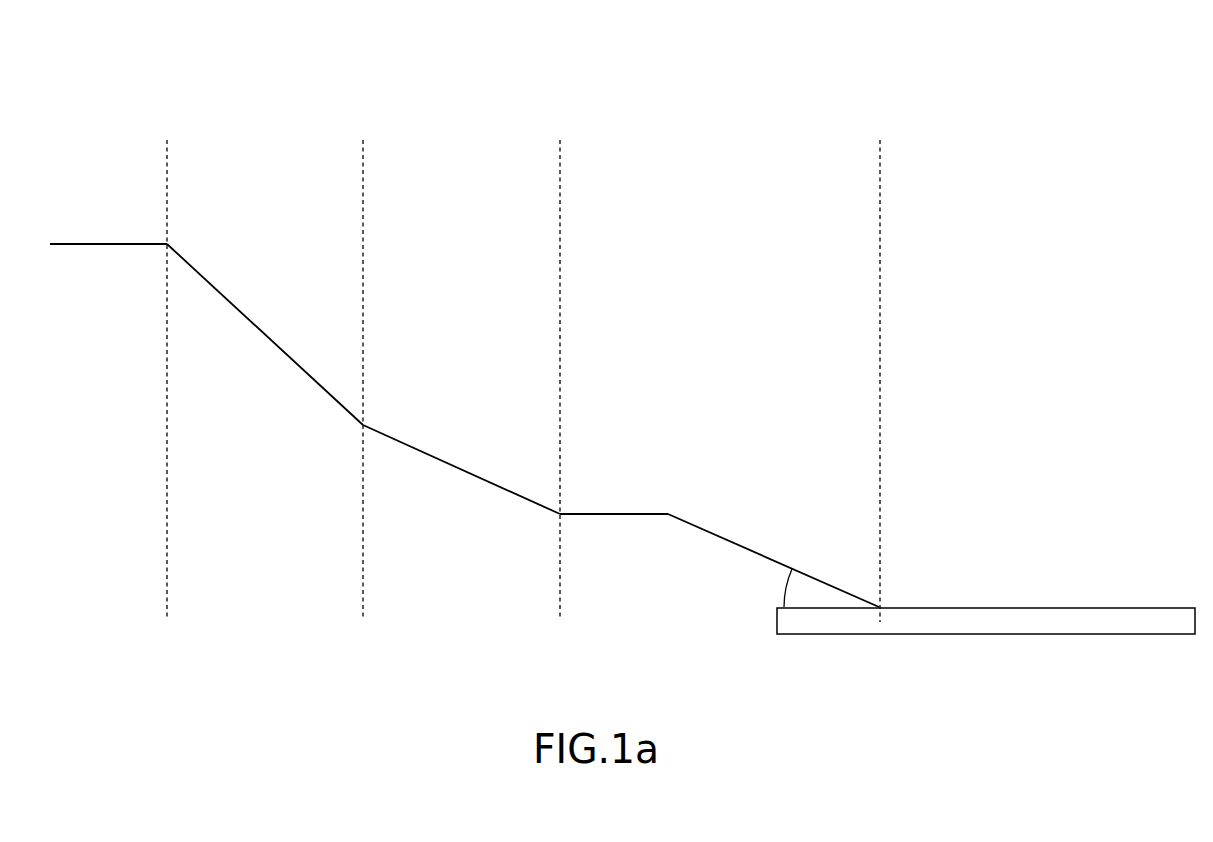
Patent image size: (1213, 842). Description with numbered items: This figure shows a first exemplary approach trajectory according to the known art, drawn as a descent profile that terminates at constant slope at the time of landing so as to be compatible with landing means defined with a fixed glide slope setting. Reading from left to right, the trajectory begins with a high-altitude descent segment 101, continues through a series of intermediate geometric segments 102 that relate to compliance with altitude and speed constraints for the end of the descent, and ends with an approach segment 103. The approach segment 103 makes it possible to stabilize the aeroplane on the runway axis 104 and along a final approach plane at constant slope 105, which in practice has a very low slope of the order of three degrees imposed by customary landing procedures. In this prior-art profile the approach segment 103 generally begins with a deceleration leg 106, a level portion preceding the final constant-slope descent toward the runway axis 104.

The high-altitude descent segment 101 is at (365, 145).
The intermediate geometric segments 102 is at (563, 145).
The approach segment 103 is at (722, 323).
The runway axis 104 is at (1180, 618).
The final approach plane at constant slope 105 is at (830, 583).
The deceleration leg 106 is at (640, 514).